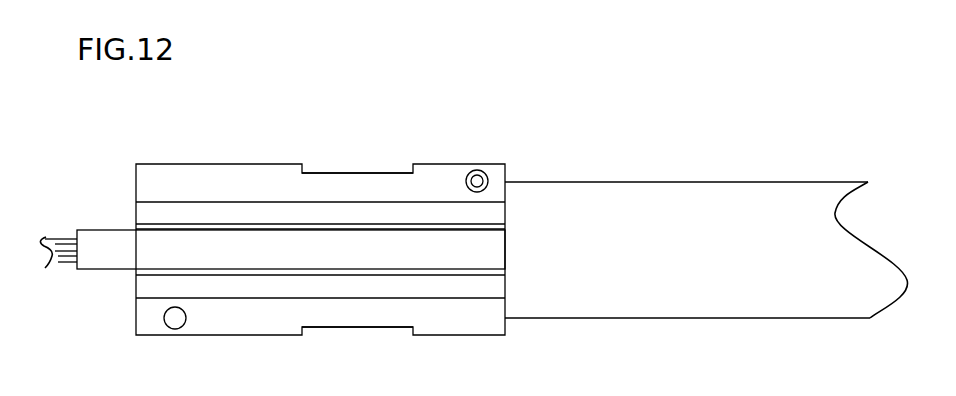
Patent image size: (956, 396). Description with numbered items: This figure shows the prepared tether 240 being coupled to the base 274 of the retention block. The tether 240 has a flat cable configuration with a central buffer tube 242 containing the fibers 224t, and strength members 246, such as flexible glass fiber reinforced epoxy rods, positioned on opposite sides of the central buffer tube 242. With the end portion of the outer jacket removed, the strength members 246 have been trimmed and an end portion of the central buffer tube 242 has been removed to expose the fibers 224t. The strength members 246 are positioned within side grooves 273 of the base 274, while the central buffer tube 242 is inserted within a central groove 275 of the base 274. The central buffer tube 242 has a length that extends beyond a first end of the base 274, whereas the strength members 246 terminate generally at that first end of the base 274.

The tether cable 240 is at (832, 181).
The central buffer tube 242 is at (113, 236).
The strength members 246 is at (152, 208).
The side grooves 273 is at (288, 202).
The base 274 is at (467, 163).
The central groove 275 is at (365, 228).
The fibers 224t is at (58, 239).